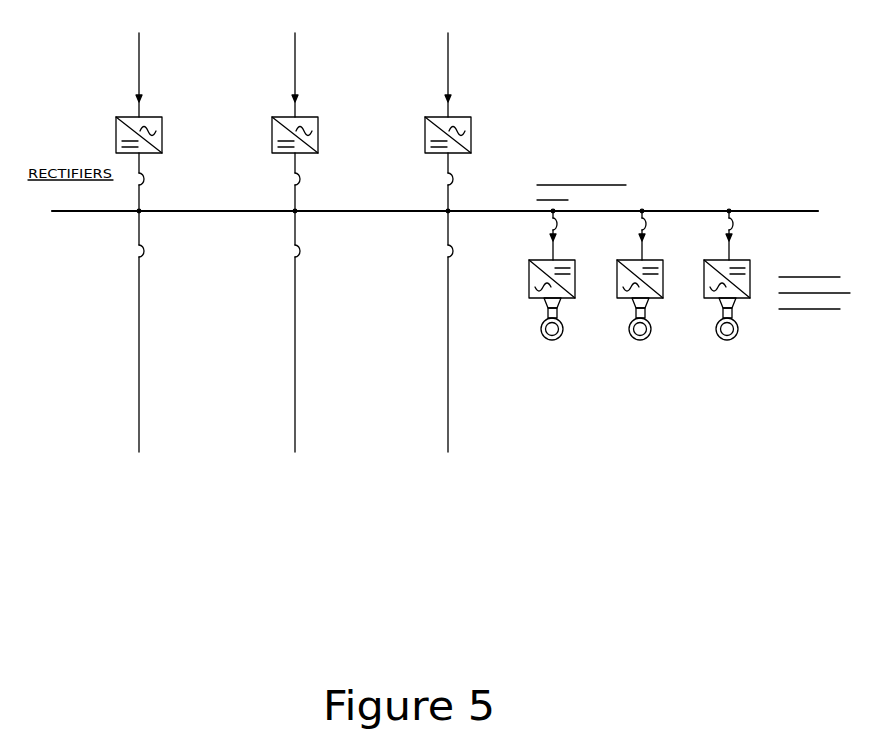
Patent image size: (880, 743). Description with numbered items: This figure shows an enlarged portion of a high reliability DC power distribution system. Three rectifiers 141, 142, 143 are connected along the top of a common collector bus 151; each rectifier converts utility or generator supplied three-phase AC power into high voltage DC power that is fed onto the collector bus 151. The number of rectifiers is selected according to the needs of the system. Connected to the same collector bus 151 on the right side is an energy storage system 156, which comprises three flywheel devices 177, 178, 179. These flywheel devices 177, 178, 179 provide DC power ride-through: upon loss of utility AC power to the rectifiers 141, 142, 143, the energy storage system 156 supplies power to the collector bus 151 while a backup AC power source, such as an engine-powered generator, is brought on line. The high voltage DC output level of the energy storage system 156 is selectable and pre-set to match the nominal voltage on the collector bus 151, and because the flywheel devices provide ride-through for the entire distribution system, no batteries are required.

The rectifier 141 is at (130, 120).
The rectifier 142 is at (290, 122).
The rectifier 143 is at (445, 122).
The collector bus 151 is at (720, 210).
The energy storage system 156 is at (660, 396).
The flywheel device 177 is at (542, 337).
The flywheel device 178 is at (637, 337).
The flywheel device 179 is at (730, 340).